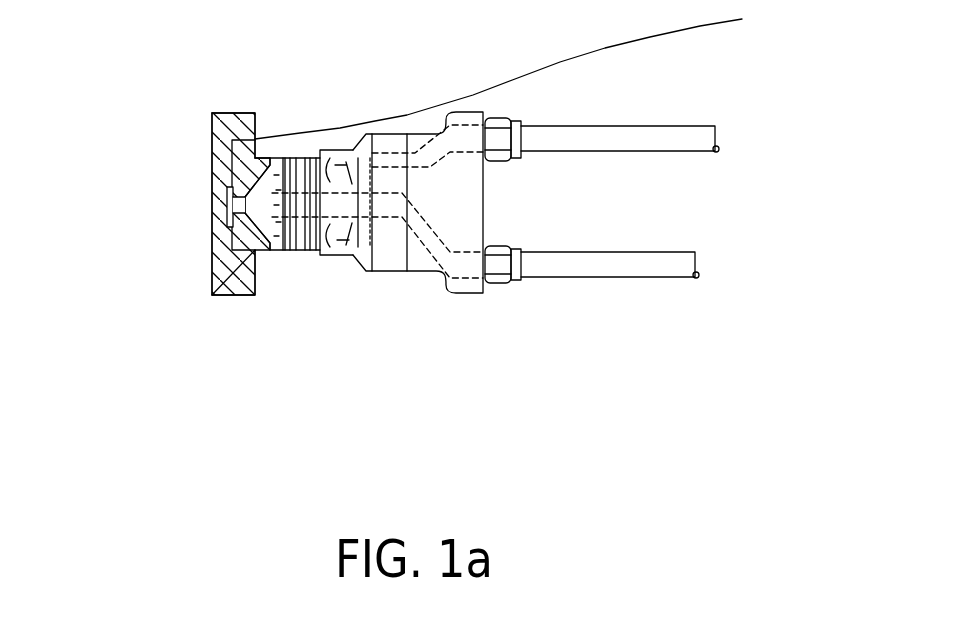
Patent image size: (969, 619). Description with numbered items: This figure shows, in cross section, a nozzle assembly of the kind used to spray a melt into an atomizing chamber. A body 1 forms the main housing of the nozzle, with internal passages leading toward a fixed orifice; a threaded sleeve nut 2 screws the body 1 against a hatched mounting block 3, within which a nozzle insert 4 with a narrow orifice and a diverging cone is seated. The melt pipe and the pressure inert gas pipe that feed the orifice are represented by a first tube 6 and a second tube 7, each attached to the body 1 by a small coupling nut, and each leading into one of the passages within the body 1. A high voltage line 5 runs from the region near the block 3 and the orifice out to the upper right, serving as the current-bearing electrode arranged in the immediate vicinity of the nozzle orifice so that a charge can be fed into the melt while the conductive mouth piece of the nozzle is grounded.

The body 1 is at (478, 292).
The threaded sleeve nut 2 is at (322, 250).
The mounting block 3 is at (213, 285).
The nozzle 4 is at (226, 200).
The electrical wire 5 is at (752, 21).
The upper supply tube 6 is at (729, 136).
The lower supply tube 7 is at (713, 262).